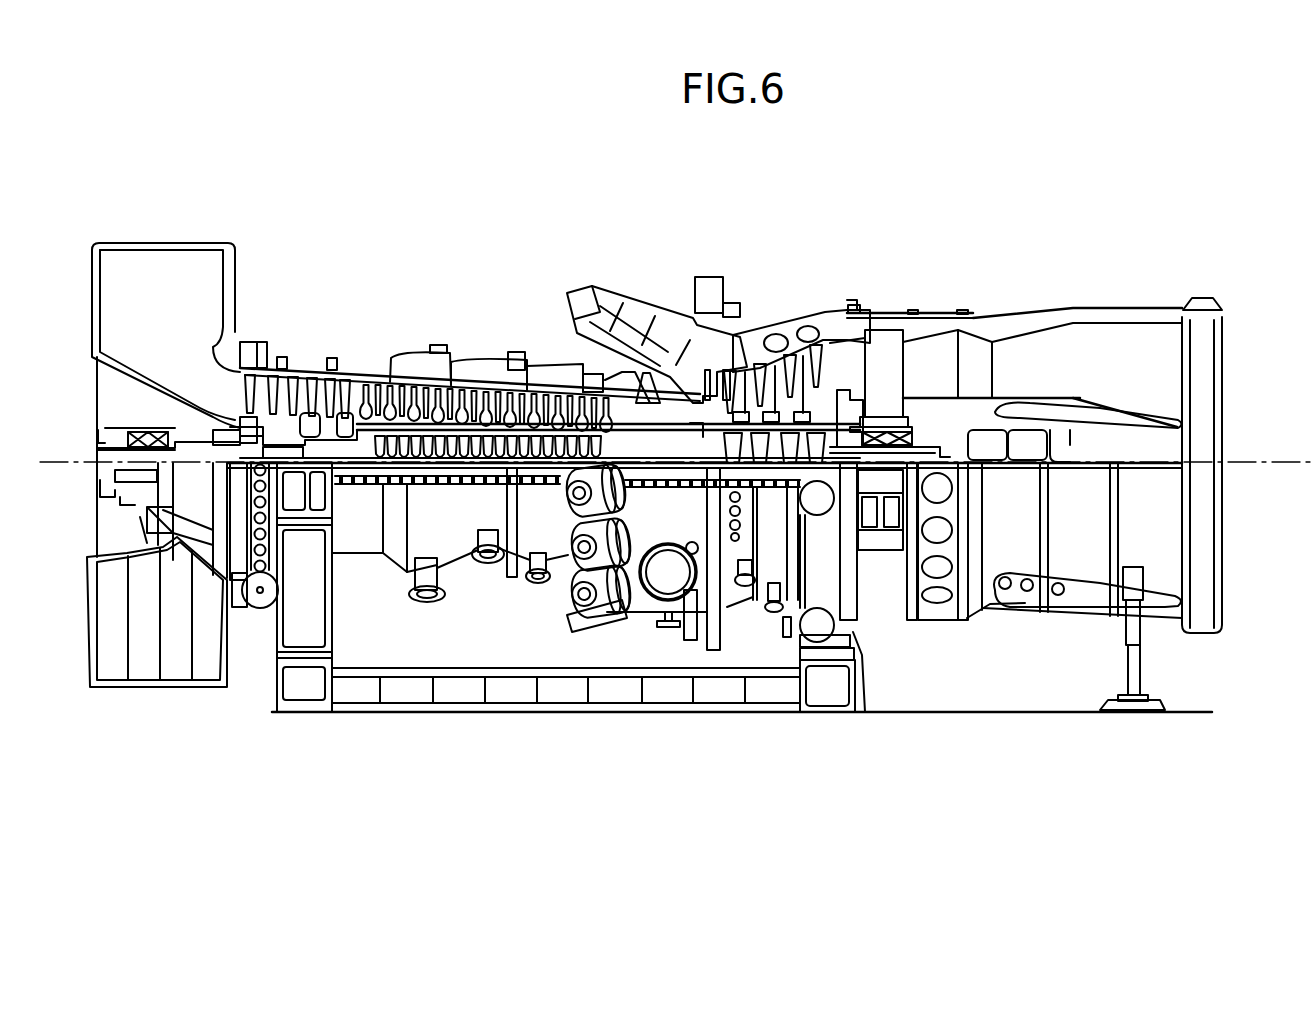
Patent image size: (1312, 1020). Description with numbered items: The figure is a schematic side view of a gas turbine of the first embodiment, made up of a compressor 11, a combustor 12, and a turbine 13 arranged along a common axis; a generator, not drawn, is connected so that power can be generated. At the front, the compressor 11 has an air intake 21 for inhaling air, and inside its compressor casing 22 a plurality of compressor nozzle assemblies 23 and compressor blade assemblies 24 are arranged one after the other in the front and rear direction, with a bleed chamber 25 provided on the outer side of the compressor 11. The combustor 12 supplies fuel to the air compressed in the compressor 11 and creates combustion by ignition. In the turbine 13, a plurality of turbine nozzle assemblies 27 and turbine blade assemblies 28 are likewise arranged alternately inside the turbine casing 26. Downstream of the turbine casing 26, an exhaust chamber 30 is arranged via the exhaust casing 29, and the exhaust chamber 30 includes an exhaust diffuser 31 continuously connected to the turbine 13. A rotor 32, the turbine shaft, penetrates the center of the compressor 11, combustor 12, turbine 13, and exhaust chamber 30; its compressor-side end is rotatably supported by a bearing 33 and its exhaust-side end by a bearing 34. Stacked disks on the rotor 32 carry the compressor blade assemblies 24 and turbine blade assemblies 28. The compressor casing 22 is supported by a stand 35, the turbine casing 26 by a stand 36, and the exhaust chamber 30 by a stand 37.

The compressor 11 is at (311, 327).
The combustor 12 is at (601, 283).
The turbine 13 is at (858, 300).
The air intake 21 is at (105, 307).
The compressor casing 22 is at (306, 378).
The compressor nozzle assemblies 23 is at (316, 380).
The compressor blade assemblies 24 is at (388, 375).
The bleed chamber 25 is at (435, 366).
The turbine casing 26 is at (795, 300).
The turbine nozzle assemblies 27 is at (771, 328).
The turbine blade assemblies 28 is at (693, 287).
The exhaust casing 29 is at (887, 313).
The exhaust chamber 30 is at (1142, 307).
The exhaust diffuser 31 is at (935, 318).
The rotor 32 is at (628, 415).
The bearing 33 is at (112, 445).
The bearing 34 is at (915, 432).
The stand 35 is at (280, 638).
The stand 36 is at (843, 632).
The stand 37 is at (1145, 647).